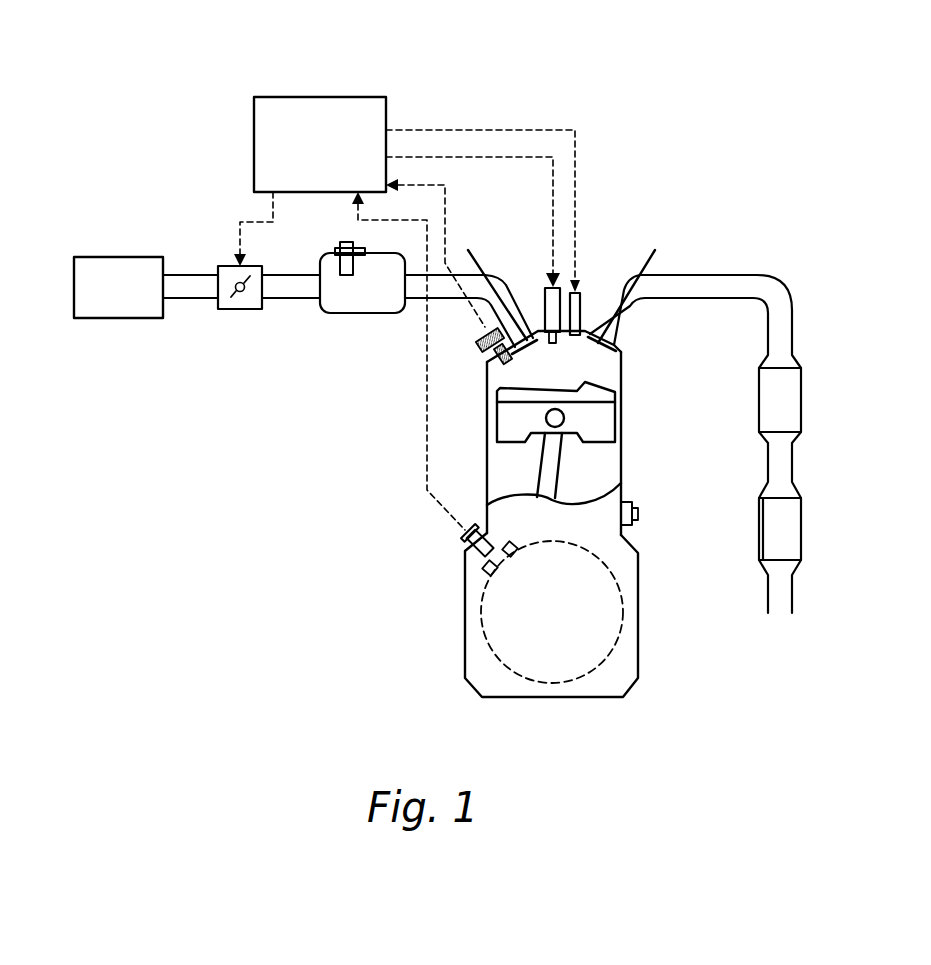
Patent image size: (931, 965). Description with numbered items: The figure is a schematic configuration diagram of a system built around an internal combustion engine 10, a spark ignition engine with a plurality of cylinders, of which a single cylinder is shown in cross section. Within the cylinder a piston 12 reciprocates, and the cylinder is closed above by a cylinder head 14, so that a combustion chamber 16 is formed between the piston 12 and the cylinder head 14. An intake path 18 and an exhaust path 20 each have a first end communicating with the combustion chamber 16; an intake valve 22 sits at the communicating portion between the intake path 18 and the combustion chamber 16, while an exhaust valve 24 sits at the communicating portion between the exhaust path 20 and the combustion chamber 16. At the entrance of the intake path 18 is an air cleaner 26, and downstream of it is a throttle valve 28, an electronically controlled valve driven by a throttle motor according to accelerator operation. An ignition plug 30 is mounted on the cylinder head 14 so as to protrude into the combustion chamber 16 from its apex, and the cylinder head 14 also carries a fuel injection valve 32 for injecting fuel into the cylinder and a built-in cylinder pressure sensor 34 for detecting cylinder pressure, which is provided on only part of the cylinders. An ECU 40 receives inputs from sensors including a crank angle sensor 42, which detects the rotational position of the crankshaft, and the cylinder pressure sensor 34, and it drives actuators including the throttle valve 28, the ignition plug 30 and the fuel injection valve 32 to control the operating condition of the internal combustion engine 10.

The internal combustion engine 10 is at (408, 633).
The piston 12 is at (598, 423).
The cylinder head 14 is at (592, 323).
The combustion chamber 16 is at (598, 363).
The intake path 18 is at (418, 288).
The exhaust path 20 is at (732, 281).
The intake valve 22 is at (480, 251).
The exhaust valve 24 is at (658, 252).
The air cleaner 26 is at (106, 257).
The throttle valve 28 is at (224, 266).
The ignition plug 30 is at (545, 302).
The fuel injection valve 32 is at (588, 298).
The cylinder pressure sensor 34 is at (487, 350).
The ECU 40 is at (320, 97).
The crank angle sensor 42 is at (465, 548).